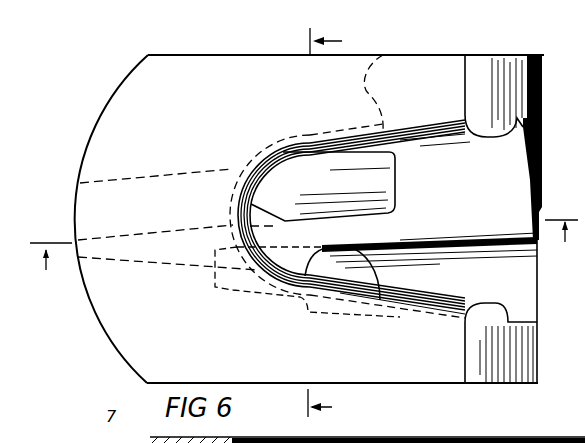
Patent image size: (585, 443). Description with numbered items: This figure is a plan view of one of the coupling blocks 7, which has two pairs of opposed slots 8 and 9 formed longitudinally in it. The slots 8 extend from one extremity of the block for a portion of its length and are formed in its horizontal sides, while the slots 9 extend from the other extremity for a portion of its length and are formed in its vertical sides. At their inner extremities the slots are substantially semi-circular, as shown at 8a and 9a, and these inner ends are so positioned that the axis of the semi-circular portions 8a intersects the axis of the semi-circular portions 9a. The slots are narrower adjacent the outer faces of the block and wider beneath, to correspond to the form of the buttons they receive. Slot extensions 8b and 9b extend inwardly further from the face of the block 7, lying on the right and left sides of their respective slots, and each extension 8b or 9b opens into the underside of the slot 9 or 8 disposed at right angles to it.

The coupling block 7 is at (309, 219).
The slots 8 is at (332, 223).
The semi-circular inner end of slot 8a is at (380, 103).
The slot extension 8b is at (323, 186).
The slots 9 is at (304, 219).
The semi-circular inner end of slot 9a is at (236, 217).
The slot extension 9b is at (222, 294).